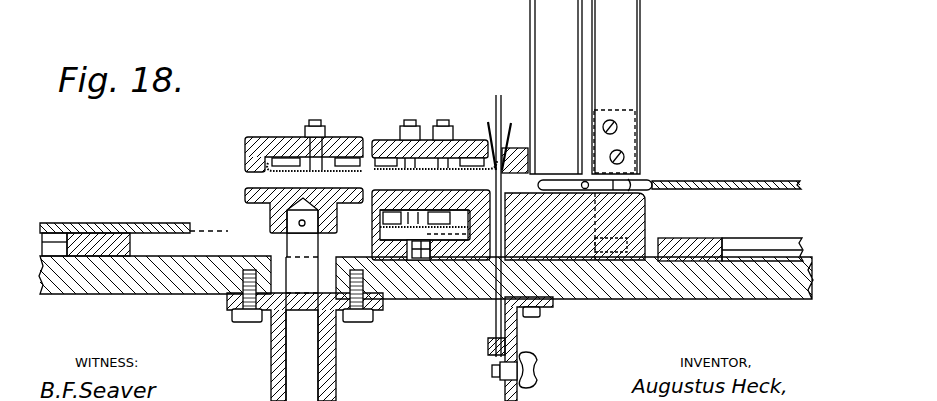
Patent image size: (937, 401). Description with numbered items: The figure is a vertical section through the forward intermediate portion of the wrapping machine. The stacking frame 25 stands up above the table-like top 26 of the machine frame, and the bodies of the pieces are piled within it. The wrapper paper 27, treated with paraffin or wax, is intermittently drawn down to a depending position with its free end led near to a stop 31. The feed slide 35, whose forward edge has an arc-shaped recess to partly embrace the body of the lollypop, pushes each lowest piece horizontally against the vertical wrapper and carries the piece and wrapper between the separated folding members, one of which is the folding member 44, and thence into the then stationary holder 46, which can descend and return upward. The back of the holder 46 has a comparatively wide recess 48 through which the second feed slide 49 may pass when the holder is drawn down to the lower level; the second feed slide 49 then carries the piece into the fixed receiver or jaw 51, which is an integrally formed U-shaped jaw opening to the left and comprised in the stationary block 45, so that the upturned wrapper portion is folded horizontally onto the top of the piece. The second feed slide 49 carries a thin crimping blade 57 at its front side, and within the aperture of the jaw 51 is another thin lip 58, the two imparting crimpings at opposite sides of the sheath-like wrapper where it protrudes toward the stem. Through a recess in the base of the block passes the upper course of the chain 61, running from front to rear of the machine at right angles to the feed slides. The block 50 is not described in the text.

The stacking frame 25 is at (530, 24).
The table-like top 26 is at (108, 285).
The wrapper paper 27 is at (496, 103).
The stop 31 is at (488, 345).
The feed slide 35 is at (752, 181).
The folding member 44 is at (394, 173).
The block 45 is at (488, 203).
The holder 46 is at (337, 140).
The recess 48 is at (245, 176).
The second feed slide 49 is at (160, 222).
The support block 50 is at (645, 208).
The fixed receiver or jaw 51 is at (392, 217).
The crimping blade 57 is at (200, 230).
The thin lip 58 is at (467, 296).
The chain 61 is at (420, 259).